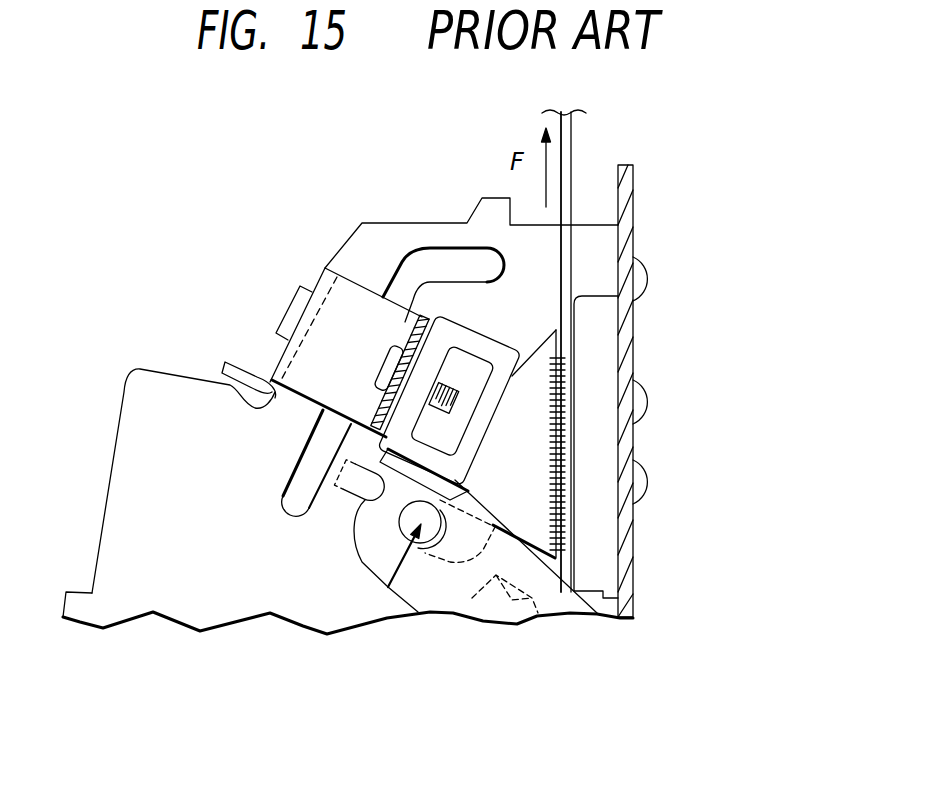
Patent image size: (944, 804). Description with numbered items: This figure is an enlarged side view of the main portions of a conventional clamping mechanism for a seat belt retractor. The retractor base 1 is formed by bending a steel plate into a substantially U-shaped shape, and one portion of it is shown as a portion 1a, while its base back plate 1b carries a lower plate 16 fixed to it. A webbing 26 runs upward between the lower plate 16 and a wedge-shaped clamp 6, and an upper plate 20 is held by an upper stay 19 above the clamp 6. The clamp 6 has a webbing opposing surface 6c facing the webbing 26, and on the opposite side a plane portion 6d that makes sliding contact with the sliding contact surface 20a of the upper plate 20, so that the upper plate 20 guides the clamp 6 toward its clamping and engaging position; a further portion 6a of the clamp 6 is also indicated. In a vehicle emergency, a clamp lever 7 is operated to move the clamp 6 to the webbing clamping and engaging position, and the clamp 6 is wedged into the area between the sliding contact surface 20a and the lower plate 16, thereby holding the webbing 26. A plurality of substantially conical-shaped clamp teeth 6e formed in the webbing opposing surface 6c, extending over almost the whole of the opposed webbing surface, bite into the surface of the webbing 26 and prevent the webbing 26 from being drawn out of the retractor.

The retractor base 1 is at (129, 368).
The housing upper wall 1a is at (375, 248).
The base back plate 1b is at (625, 252).
The clamp 6 is at (502, 513).
The pivot portion of lock member 6a is at (413, 522).
The webbing opposing surface 6c is at (558, 340).
The plane portion 6d is at (418, 321).
The clamp teeth 6e is at (563, 530).
The clamp lever 7 is at (352, 563).
The lower plate 16 is at (590, 352).
The upper stay 19 is at (304, 403).
The upper plate 20 is at (544, 363).
The sliding contact surface 20a is at (481, 390).
The webbing 26 is at (578, 150).